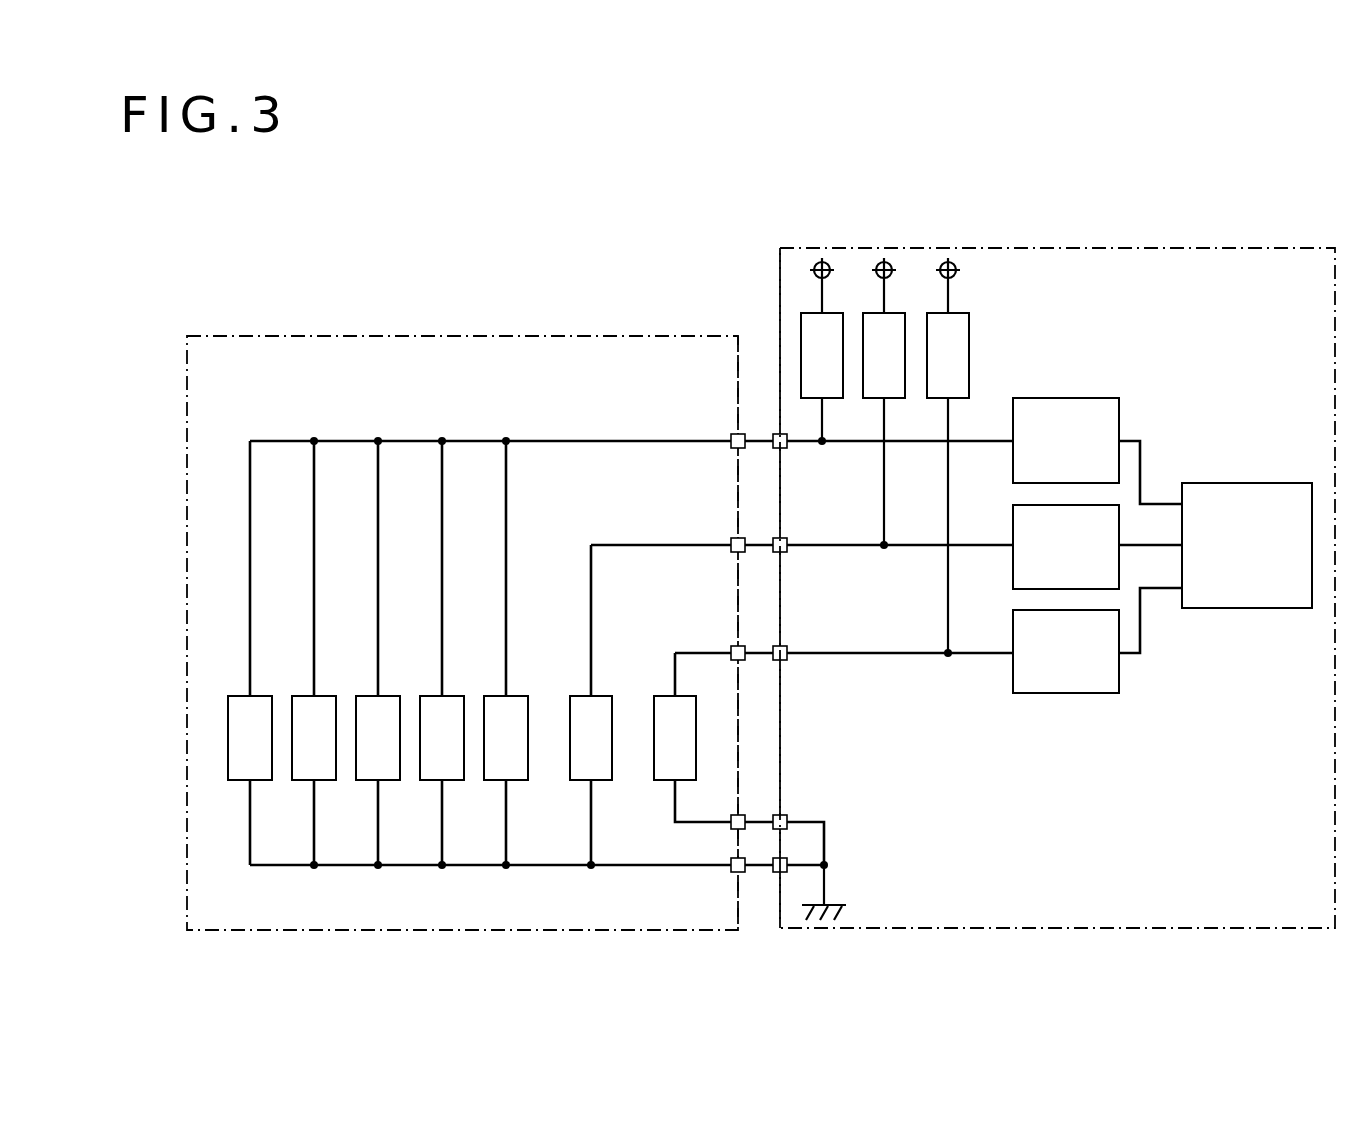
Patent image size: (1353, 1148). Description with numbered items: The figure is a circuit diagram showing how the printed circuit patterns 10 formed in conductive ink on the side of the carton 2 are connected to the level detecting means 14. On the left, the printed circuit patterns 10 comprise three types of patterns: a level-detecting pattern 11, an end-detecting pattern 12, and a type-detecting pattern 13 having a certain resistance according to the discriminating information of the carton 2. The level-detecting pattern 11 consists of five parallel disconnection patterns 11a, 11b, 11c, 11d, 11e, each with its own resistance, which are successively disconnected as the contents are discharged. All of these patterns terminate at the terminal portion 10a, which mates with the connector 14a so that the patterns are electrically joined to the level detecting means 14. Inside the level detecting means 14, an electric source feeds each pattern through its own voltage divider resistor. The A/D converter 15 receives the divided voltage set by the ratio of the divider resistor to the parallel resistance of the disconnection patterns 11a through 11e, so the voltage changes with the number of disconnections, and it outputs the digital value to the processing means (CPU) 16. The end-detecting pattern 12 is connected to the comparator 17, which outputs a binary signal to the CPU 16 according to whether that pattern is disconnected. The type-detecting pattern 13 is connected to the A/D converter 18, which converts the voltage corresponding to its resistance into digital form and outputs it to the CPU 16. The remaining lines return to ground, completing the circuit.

The carton 2 is at (536, 318).
The printed circuit patterns 10 is at (250, 336).
The terminal portion 10a is at (748, 422).
The level-detecting pattern 11 is at (416, 424).
The disconnection pattern 11a is at (229, 787).
The disconnection pattern 11b is at (293, 787).
The disconnection pattern 11c is at (357, 787).
The disconnection pattern 11d is at (421, 787).
The disconnection pattern 11e is at (485, 787).
The end-detecting pattern 12 is at (570, 764).
The type-detecting pattern 13 is at (654, 766).
The level detecting means 14 is at (1073, 248).
The connector 14a is at (775, 422).
The A/D converter 15 is at (1068, 398).
The processing means (CPU) 16 is at (1243, 483).
The comparator 17 is at (1013, 532).
The A/D converter 18 is at (1073, 693).